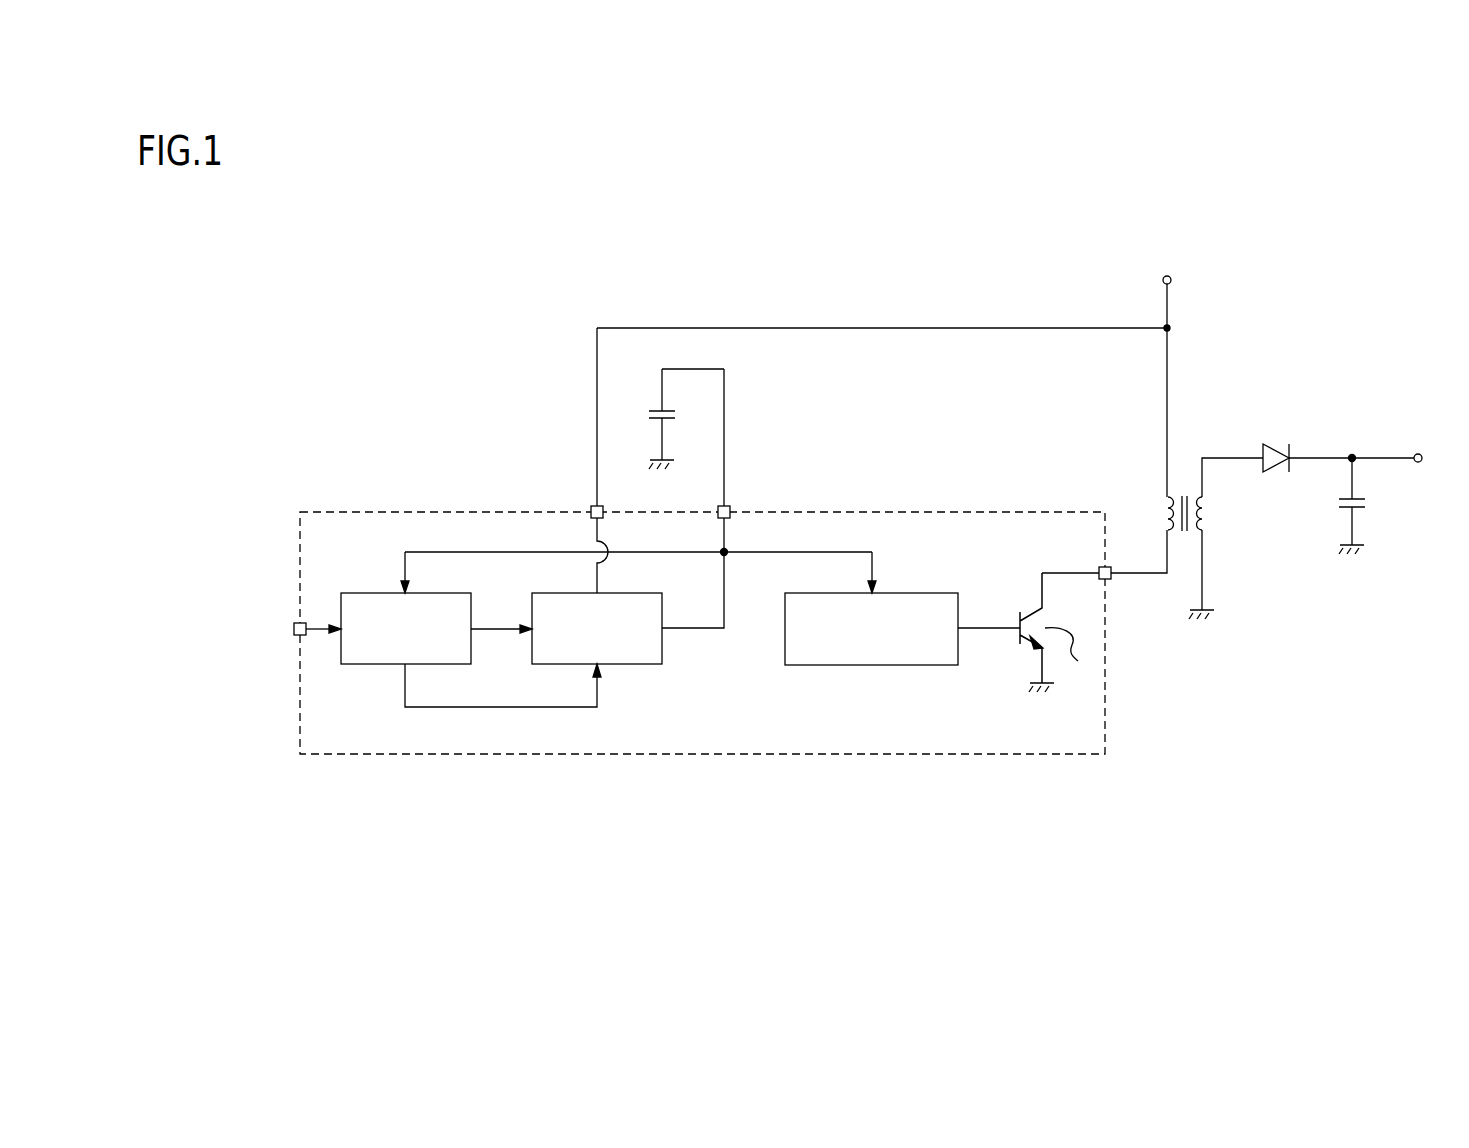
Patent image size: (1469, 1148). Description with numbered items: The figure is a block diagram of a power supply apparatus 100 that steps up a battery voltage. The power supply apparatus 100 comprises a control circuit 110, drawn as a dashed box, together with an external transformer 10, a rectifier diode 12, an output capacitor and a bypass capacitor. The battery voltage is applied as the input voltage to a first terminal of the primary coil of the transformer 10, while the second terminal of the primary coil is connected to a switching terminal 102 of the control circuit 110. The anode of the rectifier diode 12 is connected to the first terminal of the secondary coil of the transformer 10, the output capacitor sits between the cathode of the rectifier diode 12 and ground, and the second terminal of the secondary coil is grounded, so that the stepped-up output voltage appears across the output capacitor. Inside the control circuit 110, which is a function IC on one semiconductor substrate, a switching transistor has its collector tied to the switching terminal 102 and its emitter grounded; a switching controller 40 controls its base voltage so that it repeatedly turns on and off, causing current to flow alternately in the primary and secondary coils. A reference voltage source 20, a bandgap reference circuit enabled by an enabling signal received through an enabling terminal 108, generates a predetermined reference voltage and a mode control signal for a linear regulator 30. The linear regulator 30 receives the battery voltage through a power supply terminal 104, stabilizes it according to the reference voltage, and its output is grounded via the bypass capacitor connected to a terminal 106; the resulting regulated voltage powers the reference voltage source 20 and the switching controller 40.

The transformer 10 is at (1208, 515).
The rectifier diode 12 is at (1277, 440).
The reference voltage source 20 is at (377, 665).
The linear regulator 30 is at (627, 665).
The switching controller 40 is at (872, 666).
The power supply apparatus 100 is at (847, 559).
The switching terminal 102 is at (1110, 567).
The power supply terminal 104 is at (592, 506).
The terminal 106 is at (729, 506).
The enabling terminal 108 is at (295, 622).
The control circuit 110 is at (663, 755).